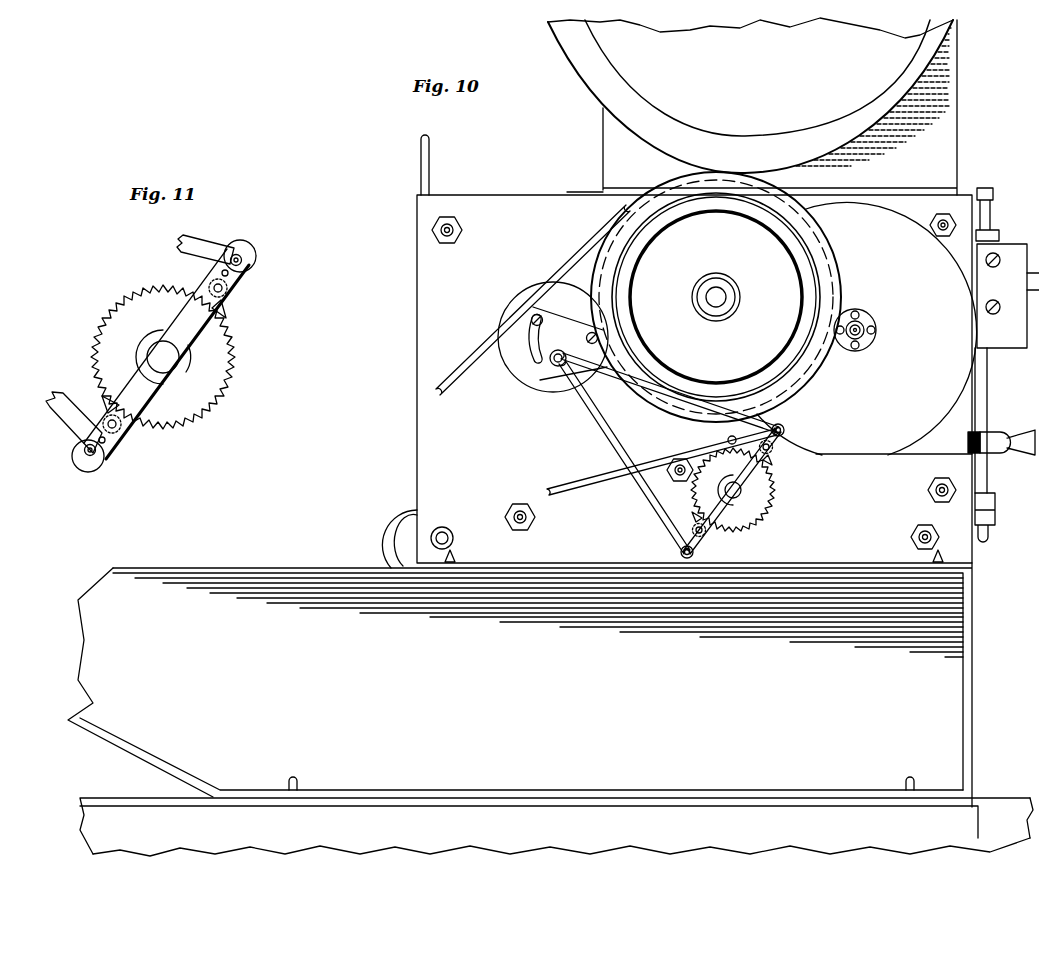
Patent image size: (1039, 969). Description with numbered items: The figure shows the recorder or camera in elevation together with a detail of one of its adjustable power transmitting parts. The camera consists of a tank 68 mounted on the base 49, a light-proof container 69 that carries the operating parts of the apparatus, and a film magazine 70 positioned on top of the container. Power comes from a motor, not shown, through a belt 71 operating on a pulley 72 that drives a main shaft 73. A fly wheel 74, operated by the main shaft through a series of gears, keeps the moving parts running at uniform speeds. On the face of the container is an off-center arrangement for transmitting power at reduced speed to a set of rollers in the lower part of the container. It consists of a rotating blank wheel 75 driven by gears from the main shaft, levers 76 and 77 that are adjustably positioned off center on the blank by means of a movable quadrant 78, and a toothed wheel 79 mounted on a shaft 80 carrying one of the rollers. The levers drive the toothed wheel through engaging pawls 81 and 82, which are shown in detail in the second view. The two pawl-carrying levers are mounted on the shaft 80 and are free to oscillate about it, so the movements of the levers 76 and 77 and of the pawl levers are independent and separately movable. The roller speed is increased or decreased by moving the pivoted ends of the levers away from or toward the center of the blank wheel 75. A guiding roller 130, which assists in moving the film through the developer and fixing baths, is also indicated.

In FIG. 10, the base 49 is at (1007, 815).
In FIG. 10, the tank 68 is at (950, 718).
In FIG. 10, the light-proof container 69 is at (422, 322).
In FIG. 10, the film magazine 70 is at (940, 149).
In FIG. 10, the belt 71 is at (474, 370).
In FIG. 10, the pulley 72 is at (612, 224).
In FIG. 10, the main shaft 73 is at (722, 293).
In FIG. 10, the fly wheel 74 is at (847, 442).
In FIG. 10, the rotating blank wheel 75 is at (514, 301).
In FIG. 10, the lever 76 is at (610, 383).
In FIG. 11, the lever 76 is at (207, 250).
In FIG. 10, the lever 77 is at (600, 420).
In FIG. 11, the lever 77 is at (65, 417).
In FIG. 10, the movable quadrant 78 is at (546, 372).
In FIG. 10, the toothed wheel 79 is at (752, 510).
In FIG. 11, the toothed wheel 79 is at (203, 404).
In FIG. 10, the shaft 80 is at (745, 492).
In FIG. 11, the shaft 80 is at (175, 362).
In FIG. 10, the pawl 81 is at (772, 455).
In FIG. 11, the pawl 81 is at (228, 305).
In FIG. 10, the pawl 82 is at (693, 522).
In FIG. 11, the pawl 82 is at (102, 407).
In FIG. 10, the guiding roller 130 is at (405, 500).